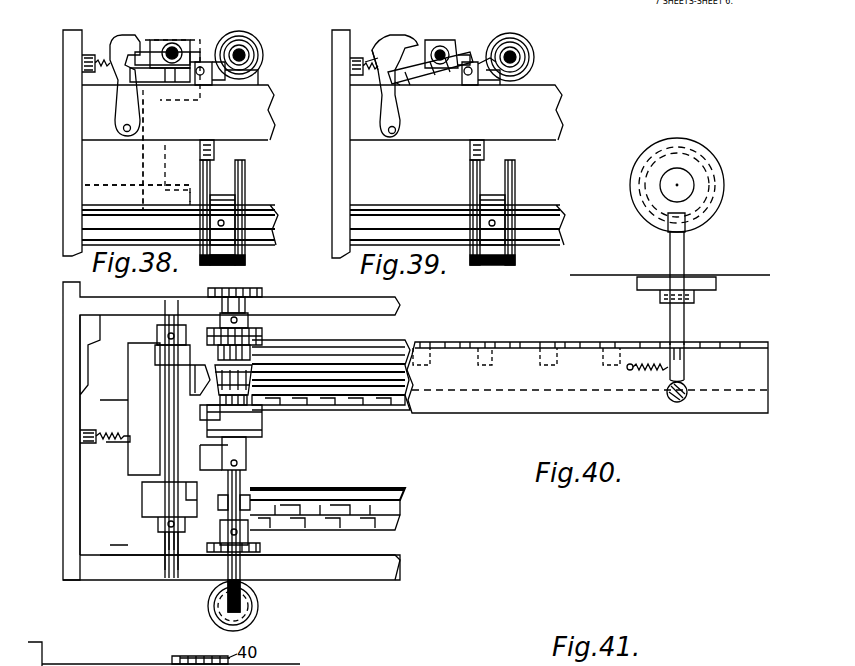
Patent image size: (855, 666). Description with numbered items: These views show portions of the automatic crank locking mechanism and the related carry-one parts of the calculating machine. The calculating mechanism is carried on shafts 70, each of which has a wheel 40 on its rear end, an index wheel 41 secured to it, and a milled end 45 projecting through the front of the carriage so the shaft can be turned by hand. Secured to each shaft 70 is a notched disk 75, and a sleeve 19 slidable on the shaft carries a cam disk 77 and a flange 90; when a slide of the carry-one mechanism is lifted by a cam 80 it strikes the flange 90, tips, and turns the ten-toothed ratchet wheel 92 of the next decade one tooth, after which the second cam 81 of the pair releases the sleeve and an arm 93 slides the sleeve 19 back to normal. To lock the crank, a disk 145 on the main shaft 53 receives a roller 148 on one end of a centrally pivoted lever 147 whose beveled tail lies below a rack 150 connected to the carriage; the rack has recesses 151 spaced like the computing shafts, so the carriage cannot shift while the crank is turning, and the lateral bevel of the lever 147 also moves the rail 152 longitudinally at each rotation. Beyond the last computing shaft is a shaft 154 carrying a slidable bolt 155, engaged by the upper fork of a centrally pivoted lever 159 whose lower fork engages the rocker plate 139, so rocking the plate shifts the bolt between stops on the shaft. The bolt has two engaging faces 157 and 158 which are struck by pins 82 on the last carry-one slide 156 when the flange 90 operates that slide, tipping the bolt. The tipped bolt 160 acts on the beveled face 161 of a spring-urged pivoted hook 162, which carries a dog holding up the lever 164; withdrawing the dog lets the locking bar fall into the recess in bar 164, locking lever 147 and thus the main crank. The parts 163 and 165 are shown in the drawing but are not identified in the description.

In FIG. 41, the sleeve 19 is at (245, 370).
In FIG. 41, the wheel 40 is at (252, 292).
In FIG. 41, the index wheel 41 is at (262, 422).
In FIG. 41, the milled end 45 is at (242, 607).
In FIG. 41, the main actuating shaft 53 is at (196, 654).
In FIG. 41, the shaft 70 is at (242, 472).
In FIG. 41, the disk 75 is at (248, 320).
In FIG. 41, the cam disk 77 is at (222, 358).
In FIG. 38, the cam 80 is at (205, 182).
In FIG. 39, the cam 80 is at (472, 173).
In FIG. 38, the cam 81 is at (243, 176).
In FIG. 39, the cam 81 is at (512, 173).
In FIG. 38, the pin 82 is at (205, 148).
In FIG. 39, the pin 82 is at (478, 146).
In FIG. 41, the pin 82 is at (197, 393).
In FIG. 38, the flange 90 is at (248, 52).
In FIG. 39, the flange 90 is at (519, 58).
In FIG. 41, the flange 90 is at (263, 382).
In FIG. 41, the ratchet wheel 92 is at (260, 405).
In FIG. 41, the arm 93 is at (252, 375).
In FIG. 41, the rocker cam plate 139 is at (395, 498).
In FIG. 40, the disk 145 is at (705, 170).
In FIG. 40, the lever 147 is at (677, 257).
In FIG. 40, the roller 148 is at (685, 228).
In FIG. 40, the rack 150 is at (587, 377).
In FIG. 40, the recess 151 is at (485, 355).
In FIG. 40, the rail 152 is at (533, 345).
In FIG. 41, the rail 152 is at (305, 350).
In FIG. 38, the shaft 154 is at (165, 50).
In FIG. 39, the shaft 154 is at (440, 48).
In FIG. 41, the shaft 154 is at (172, 565).
In FIG. 38, the bolt 155 is at (190, 45).
In FIG. 39, the bolt 155 is at (455, 50).
In FIG. 41, the bolt 155 is at (144, 409).
In FIG. 38, the slide 156 is at (215, 72).
In FIG. 39, the slide 156 is at (486, 78).
In FIG. 41, the slide 156 is at (215, 420).
In FIG. 38, the engaging face 157 is at (250, 48).
In FIG. 39, the engaging face 157 is at (520, 50).
In FIG. 41, the engaging face 157 is at (160, 437).
In FIG. 41, the engaging face 158 is at (182, 342).
In FIG. 38, the lever 159 is at (143, 188).
In FIG. 41, the lever 159 is at (152, 507).
In FIG. 39, the bolt 160 is at (400, 80).
In FIG. 38, the beveled face 161 is at (140, 66).
In FIG. 39, the beveled face 161 is at (398, 50).
In FIG. 39, the hook 162 is at (375, 50).
In FIG. 41, the hook 162 is at (98, 440).
In FIG. 38, the screw 163 is at (135, 65).
In FIG. 38, the lever 164 is at (173, 78).
In FIG. 39, the lever 164 is at (440, 78).
In FIG. 39, the pin 165 is at (405, 85).